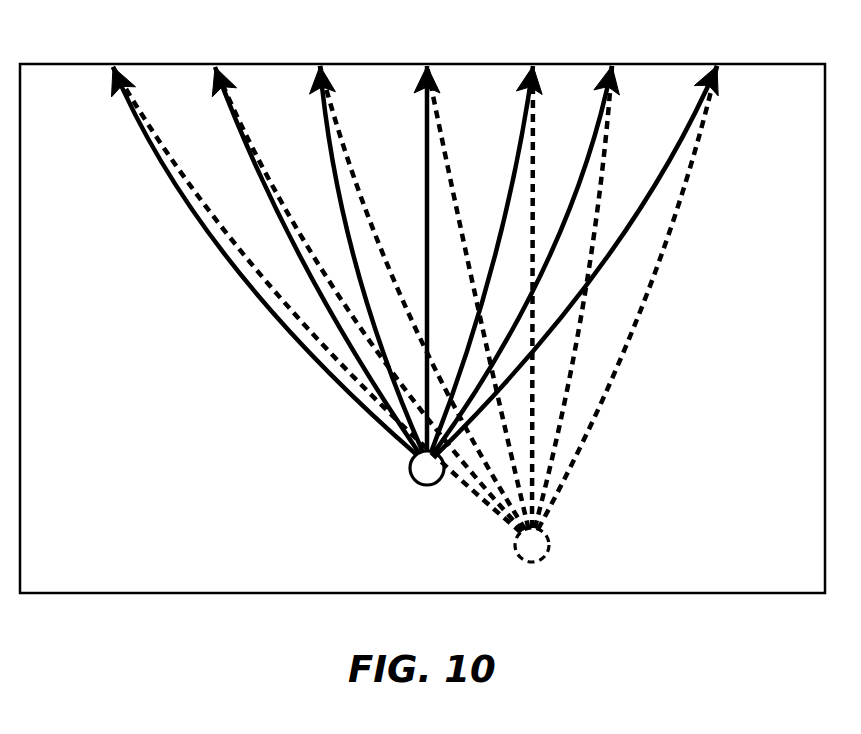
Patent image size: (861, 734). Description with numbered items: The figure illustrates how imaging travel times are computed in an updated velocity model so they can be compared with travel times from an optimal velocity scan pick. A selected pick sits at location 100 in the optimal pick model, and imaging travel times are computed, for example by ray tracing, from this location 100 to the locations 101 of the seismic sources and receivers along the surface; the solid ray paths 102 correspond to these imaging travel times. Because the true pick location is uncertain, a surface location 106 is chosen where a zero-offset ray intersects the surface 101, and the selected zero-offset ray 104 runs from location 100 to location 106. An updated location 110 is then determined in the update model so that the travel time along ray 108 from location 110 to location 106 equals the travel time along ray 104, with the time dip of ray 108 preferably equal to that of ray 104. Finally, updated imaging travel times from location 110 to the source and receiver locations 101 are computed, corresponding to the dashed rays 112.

The location of the pick 100 is at (409, 475).
The locations of the seismic sources and receivers 101 is at (749, 62).
The ray paths 102 is at (213, 237).
The zero-offset ray 104 is at (415, 260).
The zero-offset ray exit location 106 is at (320, 64).
The ray in the update model 108 is at (415, 299).
The updated location 110 is at (555, 546).
The rays corresponding to updated imaging travel times 112 is at (568, 378).